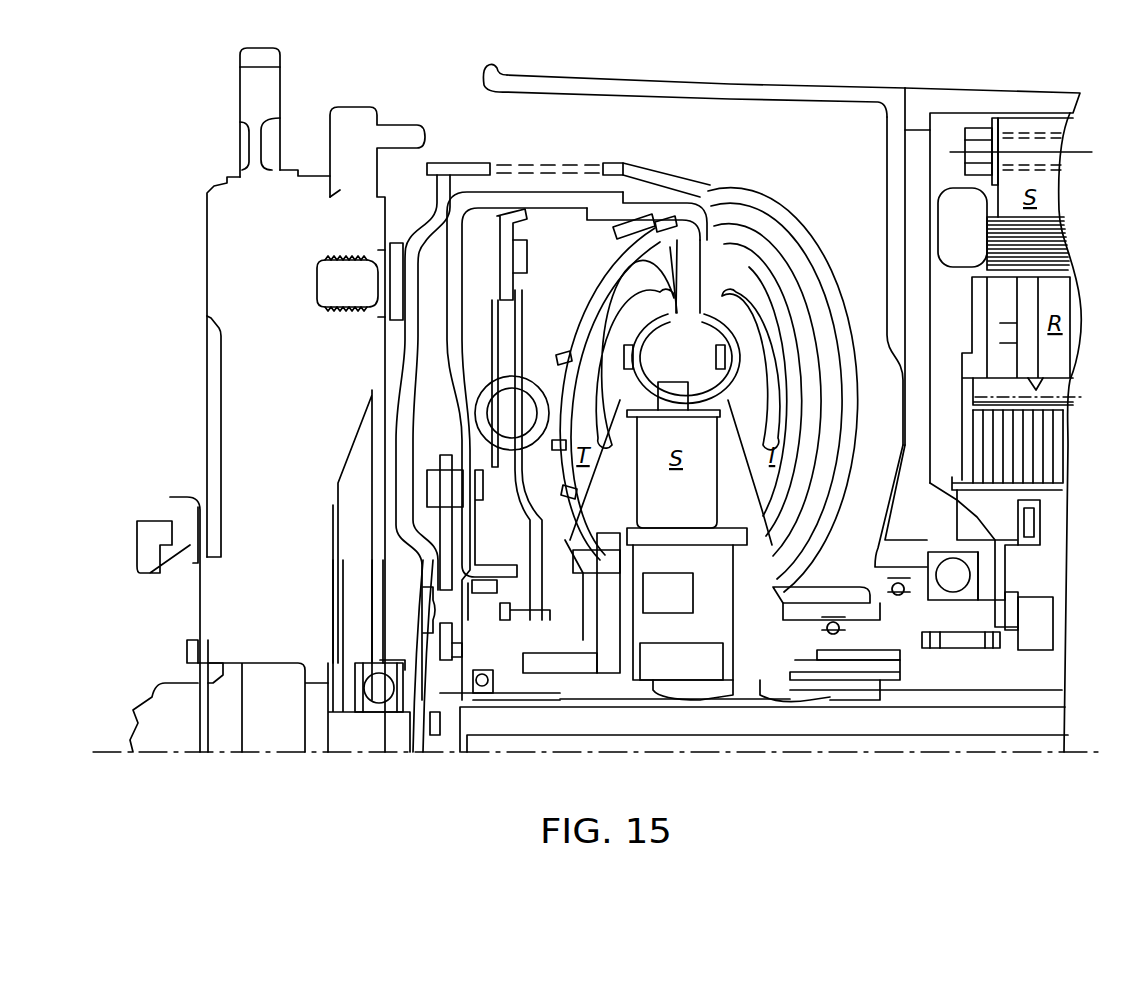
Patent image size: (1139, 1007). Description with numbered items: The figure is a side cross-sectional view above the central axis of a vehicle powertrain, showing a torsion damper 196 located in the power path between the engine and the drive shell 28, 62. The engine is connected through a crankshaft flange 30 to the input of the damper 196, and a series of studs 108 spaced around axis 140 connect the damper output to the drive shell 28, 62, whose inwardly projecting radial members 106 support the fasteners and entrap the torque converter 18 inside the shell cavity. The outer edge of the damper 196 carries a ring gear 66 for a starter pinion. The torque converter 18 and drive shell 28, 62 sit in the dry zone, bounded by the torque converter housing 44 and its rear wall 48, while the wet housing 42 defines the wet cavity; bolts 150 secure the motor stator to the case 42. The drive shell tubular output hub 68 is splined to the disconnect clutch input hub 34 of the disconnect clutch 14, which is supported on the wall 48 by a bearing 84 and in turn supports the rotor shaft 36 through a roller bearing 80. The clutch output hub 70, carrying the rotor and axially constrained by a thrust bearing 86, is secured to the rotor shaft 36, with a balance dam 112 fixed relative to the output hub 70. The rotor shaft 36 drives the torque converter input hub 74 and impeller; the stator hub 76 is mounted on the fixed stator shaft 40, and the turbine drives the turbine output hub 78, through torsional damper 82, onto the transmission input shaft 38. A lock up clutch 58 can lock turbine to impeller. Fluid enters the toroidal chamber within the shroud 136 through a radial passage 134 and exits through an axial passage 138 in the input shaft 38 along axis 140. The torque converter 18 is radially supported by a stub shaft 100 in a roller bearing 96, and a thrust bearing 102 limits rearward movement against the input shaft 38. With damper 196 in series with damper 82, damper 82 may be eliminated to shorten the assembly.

The disconnect clutch 14 is at (961, 441).
The torque converter 18 is at (790, 208).
The drive shell 28 is at (680, 180).
The crankshaft flange 30 is at (165, 703).
The disconnect clutch input hub 34 is at (978, 585).
The rotor shaft 36 is at (868, 655).
The transmission input shaft 38 is at (662, 722).
The stator shaft 40 is at (980, 690).
The wet housing 42 is at (934, 102).
The torque converter housing 44 is at (622, 90).
The rear wall 48 is at (893, 288).
The lock up clutch 58 is at (468, 275).
The drive shell 62 is at (767, 390).
The ring gear 66 is at (258, 91).
The drive shell tubular output hub 68 is at (838, 592).
The disconnect clutch output hub 70 is at (1037, 640).
The torque converter input hub 74 is at (800, 673).
The stator hub 76 is at (690, 662).
The turbine output hub 78 is at (518, 676).
The roller bearing 80 is at (955, 642).
The torsional damper 82 is at (547, 335).
The bearing 84 is at (956, 575).
The thrust bearing 86 is at (1013, 608).
The roller bearing 96 is at (379, 692).
The stub shaft 100 is at (357, 732).
The thrust bearing 102 is at (437, 735).
The inwardly projecting radial members 106 is at (430, 212).
The studs 108 is at (368, 285).
The balance dam 112 is at (1045, 530).
The radial passage 134 is at (628, 677).
The shroud 136 is at (725, 238).
The axial passage 138 is at (828, 745).
The axis 140 is at (263, 752).
The bolts 150 is at (1013, 140).
The torsion damper 196 is at (199, 328).